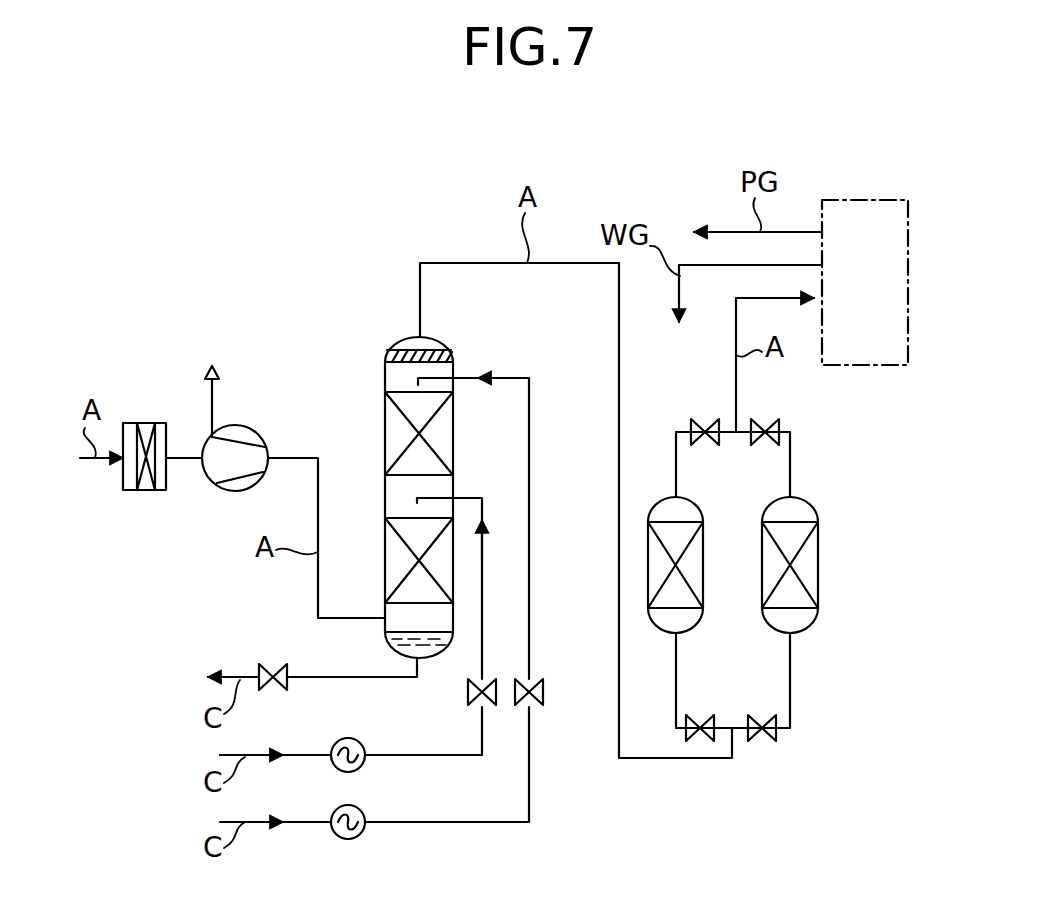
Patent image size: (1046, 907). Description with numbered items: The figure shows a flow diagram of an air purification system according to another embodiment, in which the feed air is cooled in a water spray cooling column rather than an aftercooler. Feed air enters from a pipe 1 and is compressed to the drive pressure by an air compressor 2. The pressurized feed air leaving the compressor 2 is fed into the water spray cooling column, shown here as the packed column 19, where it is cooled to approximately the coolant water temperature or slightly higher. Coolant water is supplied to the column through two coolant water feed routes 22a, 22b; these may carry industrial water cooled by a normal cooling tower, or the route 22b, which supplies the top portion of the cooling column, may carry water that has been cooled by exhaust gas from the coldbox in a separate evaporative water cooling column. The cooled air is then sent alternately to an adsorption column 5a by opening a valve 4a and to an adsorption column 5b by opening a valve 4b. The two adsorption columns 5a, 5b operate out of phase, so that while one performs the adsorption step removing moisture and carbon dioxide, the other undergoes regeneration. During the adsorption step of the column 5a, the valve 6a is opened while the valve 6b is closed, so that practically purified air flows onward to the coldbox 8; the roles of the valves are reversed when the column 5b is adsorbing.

The pipe 1 is at (150, 423).
The air compressor 2 is at (255, 425).
The rectifying column 19 is at (405, 337).
The coolant water feed route 22a is at (477, 498).
The coolant water feed route 22b is at (505, 378).
The valve 4a is at (700, 715).
The valve 4b is at (766, 715).
The adsorption column 5a is at (703, 592).
The adsorption column 5b is at (818, 575).
The valve 6a is at (703, 440).
The valve 6b is at (764, 440).
The coldbox 8 is at (897, 197).